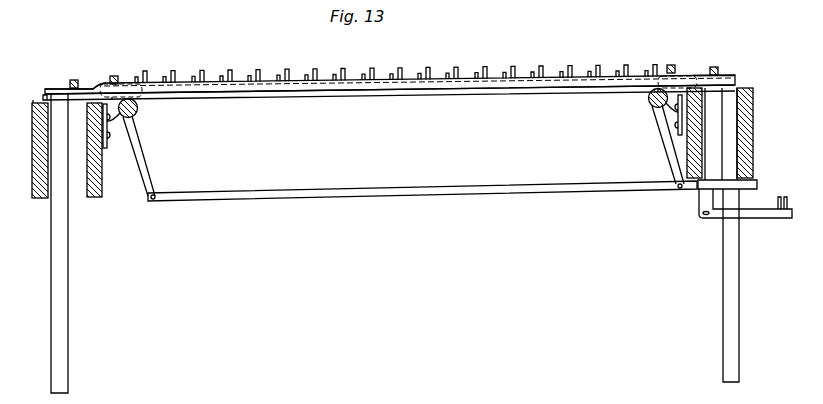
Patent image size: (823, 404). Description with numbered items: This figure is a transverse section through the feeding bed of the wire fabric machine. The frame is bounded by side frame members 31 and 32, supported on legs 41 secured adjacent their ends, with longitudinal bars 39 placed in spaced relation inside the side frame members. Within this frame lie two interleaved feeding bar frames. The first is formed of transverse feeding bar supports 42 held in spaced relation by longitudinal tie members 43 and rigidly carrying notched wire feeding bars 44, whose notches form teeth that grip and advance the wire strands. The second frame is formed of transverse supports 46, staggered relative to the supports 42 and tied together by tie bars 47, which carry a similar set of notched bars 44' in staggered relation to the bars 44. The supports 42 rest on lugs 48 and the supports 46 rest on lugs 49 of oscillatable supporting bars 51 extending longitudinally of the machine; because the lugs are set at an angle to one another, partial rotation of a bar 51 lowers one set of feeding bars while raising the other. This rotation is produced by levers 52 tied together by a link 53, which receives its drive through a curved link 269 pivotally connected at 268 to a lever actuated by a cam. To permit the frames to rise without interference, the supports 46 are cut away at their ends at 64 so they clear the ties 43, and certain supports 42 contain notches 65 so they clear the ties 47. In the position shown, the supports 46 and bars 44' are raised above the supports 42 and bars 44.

The side frame member 31 is at (746, 148).
The side frame member 32 is at (38, 190).
The longitudinal bar 39 is at (93, 198).
The leg 41 is at (63, 302).
The transverse feeding bar support 42 is at (358, 94).
The longitudinal tie member 43 is at (70, 80).
The notched wire feeding bar 44 is at (396, 61).
The notched bar 44' is at (511, 56).
The transverse support 46 is at (213, 82).
The tie bar 47 is at (115, 76).
The lug 48 is at (108, 92).
The lug 49 is at (138, 106).
The oscillatable supporting bar 51 is at (135, 115).
The lever 52 is at (146, 160).
The link 53 is at (445, 186).
The cut-away end 64 is at (95, 88).
The notch 65 is at (126, 86).
The pivot 268 is at (782, 196).
The curved link 269 is at (718, 212).